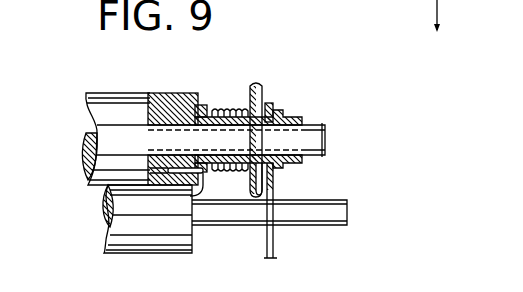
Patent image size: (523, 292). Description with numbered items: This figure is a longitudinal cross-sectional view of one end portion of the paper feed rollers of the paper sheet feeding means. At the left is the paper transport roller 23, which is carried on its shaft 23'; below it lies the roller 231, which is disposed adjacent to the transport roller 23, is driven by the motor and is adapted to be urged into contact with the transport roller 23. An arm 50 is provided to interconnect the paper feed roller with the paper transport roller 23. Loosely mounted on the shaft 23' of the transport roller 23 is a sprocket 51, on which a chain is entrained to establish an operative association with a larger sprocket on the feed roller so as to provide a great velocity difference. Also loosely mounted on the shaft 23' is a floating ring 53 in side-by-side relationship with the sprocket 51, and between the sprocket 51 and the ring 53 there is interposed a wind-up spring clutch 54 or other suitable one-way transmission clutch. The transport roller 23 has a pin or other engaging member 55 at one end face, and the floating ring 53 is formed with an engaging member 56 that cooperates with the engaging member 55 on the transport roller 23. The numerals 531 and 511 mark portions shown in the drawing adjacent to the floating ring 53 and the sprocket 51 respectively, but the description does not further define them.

The paper transport roller 23 is at (116, 114).
The shaft of the transport roller 23' is at (322, 116).
The roller 231 is at (123, 220).
The arm 50 is at (275, 243).
The sprocket 51 is at (257, 82).
The bolt lower portion 511 is at (248, 180).
The floating ring 53 is at (193, 99).
The shaft 531 is at (225, 139).
The wind-up spring clutch 54 is at (240, 112).
The pin or engaging member 55 is at (198, 184).
The engaging member 56 is at (200, 105).